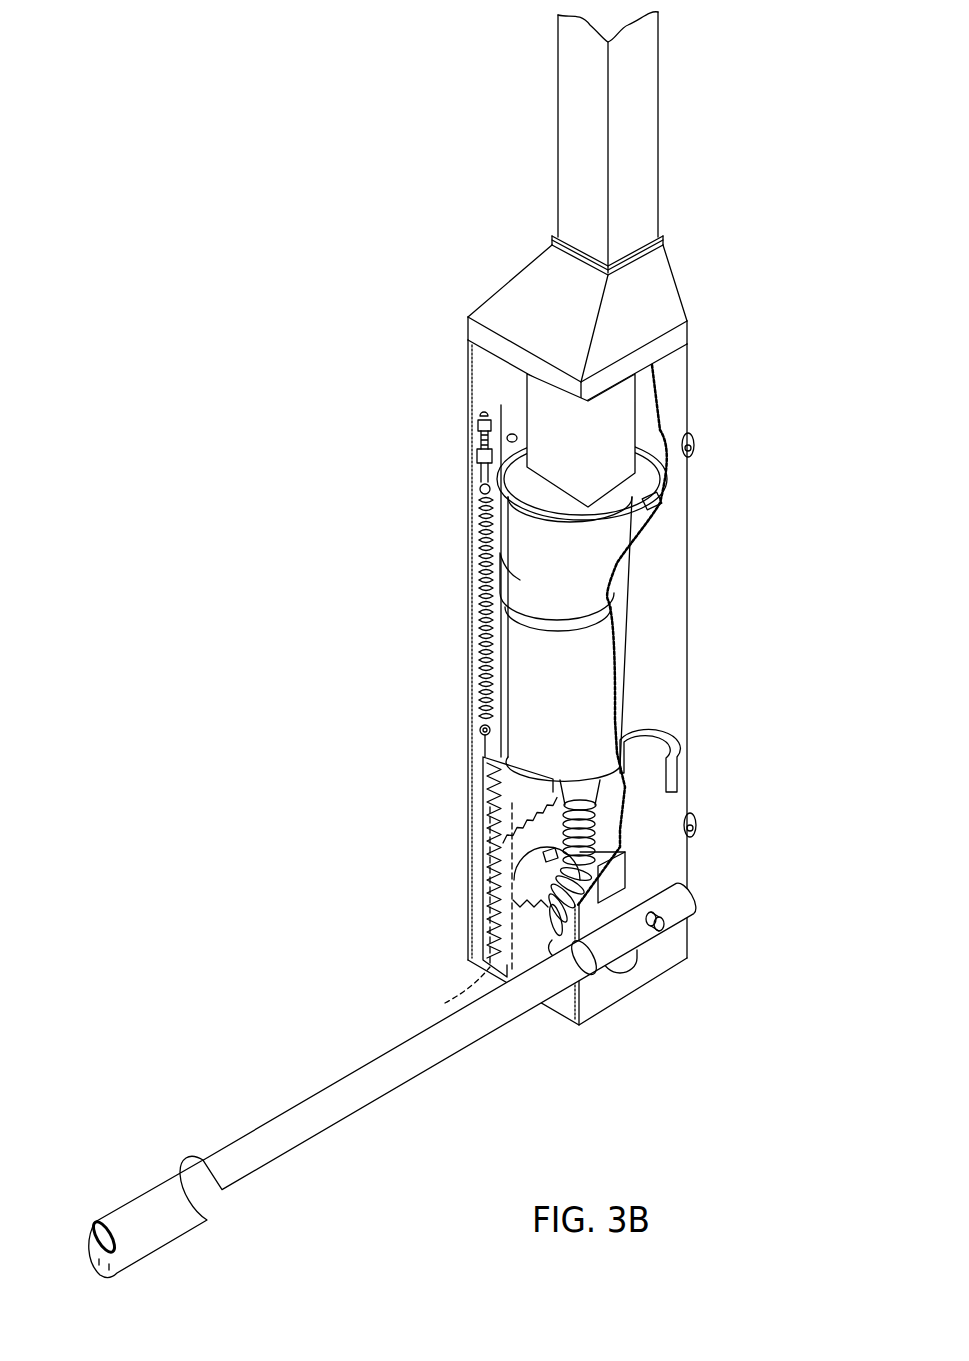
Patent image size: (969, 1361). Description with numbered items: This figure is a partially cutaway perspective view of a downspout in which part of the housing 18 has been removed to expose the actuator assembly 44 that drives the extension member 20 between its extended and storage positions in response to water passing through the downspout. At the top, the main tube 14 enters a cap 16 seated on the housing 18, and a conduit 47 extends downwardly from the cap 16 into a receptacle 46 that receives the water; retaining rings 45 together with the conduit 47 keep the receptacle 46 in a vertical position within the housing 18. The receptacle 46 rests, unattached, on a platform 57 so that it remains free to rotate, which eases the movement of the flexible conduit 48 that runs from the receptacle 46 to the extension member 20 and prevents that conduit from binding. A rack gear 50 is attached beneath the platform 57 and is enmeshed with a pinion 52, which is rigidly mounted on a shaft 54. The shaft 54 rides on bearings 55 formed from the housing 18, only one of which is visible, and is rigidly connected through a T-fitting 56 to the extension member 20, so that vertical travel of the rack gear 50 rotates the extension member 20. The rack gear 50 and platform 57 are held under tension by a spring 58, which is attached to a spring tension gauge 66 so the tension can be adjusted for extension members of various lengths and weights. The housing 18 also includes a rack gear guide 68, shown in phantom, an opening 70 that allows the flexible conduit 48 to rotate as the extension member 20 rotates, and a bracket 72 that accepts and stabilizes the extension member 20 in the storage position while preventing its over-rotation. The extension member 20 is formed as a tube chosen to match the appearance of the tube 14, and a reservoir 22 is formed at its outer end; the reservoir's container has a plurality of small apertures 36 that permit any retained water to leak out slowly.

The tube 14 is at (633, 152).
The cap 16 is at (518, 291).
The housing 18 is at (676, 643).
The extension member 20 is at (335, 1098).
The reservoir 22 is at (168, 1192).
The apertures 36 is at (100, 1266).
The actuator assembly 44 is at (468, 650).
The retaining rings 45 is at (500, 486).
The receptacle 46 is at (530, 543).
The conduit 47 is at (624, 420).
The flexible conduit 48 is at (575, 882).
The rack gear 50 is at (487, 797).
The pinion 52 is at (520, 883).
The shaft 54 is at (505, 852).
The bearings 55 is at (610, 890).
The T-fitting 56 is at (680, 917).
The platform 57 is at (480, 747).
The spring 58 is at (481, 554).
The spring tension gauge 66 is at (477, 434).
The rack gear guide 68 is at (450, 995).
The opening 70 is at (627, 867).
The bracket 72 is at (675, 758).